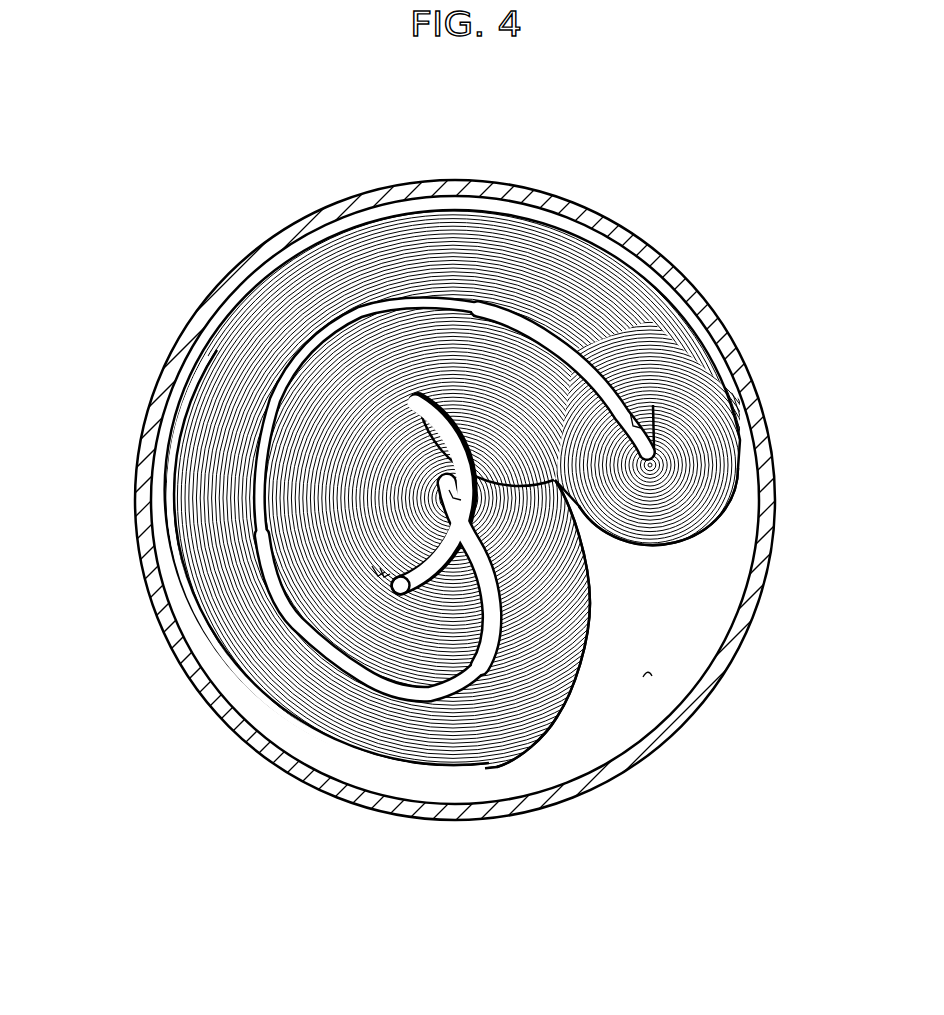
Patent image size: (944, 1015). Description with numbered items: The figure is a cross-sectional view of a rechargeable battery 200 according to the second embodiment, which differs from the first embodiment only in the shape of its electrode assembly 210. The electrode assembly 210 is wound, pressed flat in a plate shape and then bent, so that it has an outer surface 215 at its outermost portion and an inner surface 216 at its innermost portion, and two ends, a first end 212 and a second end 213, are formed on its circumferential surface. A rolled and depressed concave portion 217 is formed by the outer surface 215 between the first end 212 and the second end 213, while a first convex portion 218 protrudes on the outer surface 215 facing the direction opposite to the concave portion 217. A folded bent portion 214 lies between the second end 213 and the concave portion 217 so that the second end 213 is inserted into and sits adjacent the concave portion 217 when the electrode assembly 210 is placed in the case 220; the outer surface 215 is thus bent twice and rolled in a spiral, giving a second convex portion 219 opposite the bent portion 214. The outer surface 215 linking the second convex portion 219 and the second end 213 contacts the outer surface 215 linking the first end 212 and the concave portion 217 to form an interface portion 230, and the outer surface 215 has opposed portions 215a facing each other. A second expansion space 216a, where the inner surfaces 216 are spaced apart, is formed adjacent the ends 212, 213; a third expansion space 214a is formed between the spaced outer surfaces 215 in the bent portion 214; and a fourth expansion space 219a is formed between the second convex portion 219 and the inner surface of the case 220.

The rechargeable battery 200 is at (318, 183).
The electrode assembly 210 is at (718, 545).
The first end 212 is at (663, 547).
The second end 213 is at (355, 468).
The bent portion 214 is at (386, 597).
The third expansion space 214a is at (382, 577).
The outer surface 215 is at (627, 275).
The opposed portions 215a is at (373, 570).
The inner surface 216 is at (604, 390).
The second expansion space 216a is at (641, 427).
The concave portion 217 is at (388, 452).
The first convex portion 218 is at (193, 370).
The second convex portion 219 is at (577, 688).
The fourth expansion space 219a is at (650, 678).
The case 220 is at (543, 196).
The interface portion 230 is at (550, 460).